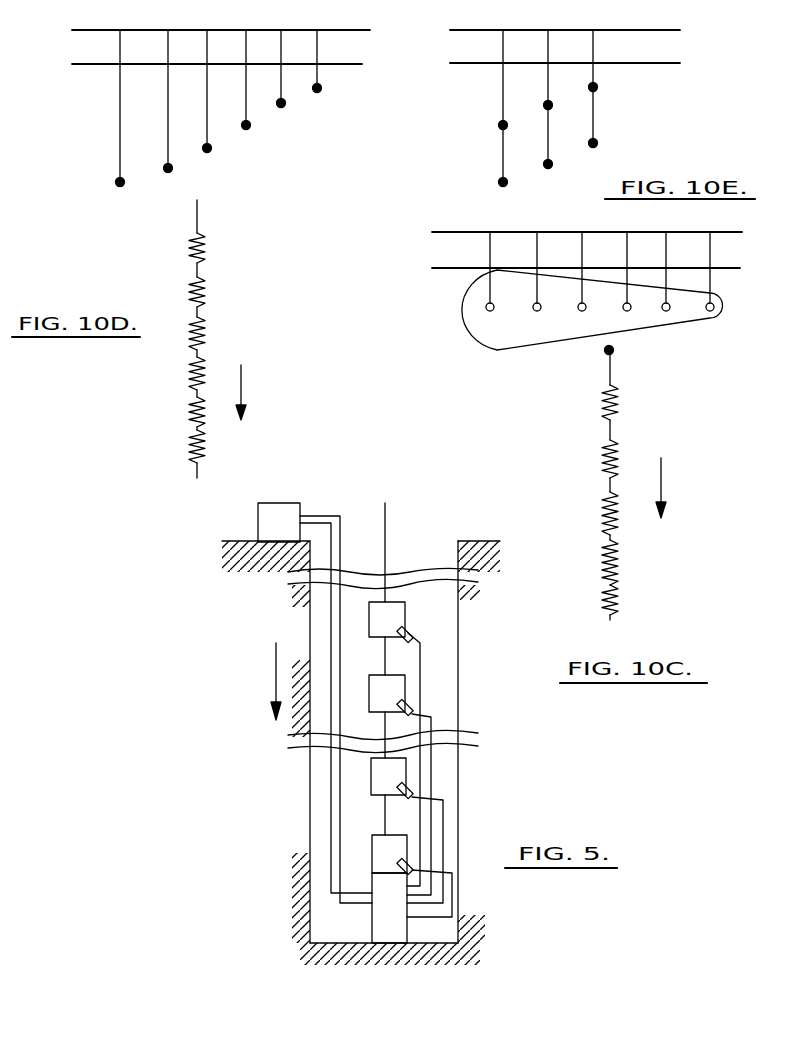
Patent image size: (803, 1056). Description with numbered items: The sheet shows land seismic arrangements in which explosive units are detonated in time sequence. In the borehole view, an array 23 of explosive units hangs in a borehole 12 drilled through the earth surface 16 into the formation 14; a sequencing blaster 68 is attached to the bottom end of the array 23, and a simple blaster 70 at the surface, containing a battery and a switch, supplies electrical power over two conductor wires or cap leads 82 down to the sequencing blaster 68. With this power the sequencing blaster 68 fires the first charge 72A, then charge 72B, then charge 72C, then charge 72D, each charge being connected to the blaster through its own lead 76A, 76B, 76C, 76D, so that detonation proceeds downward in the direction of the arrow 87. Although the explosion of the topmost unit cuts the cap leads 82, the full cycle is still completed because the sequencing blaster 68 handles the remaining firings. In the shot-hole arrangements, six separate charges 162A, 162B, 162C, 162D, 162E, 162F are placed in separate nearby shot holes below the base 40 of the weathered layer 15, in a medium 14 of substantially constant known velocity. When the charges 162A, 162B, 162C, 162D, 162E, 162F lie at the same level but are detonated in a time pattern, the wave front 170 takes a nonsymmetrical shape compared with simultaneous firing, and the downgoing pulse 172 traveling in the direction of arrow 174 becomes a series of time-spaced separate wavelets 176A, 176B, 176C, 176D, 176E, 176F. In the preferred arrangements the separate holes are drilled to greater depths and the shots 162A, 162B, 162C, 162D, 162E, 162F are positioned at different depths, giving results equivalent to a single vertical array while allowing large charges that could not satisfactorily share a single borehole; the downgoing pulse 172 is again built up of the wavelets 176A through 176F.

In FIG. 5, the borehole 12 is at (460, 623).
In FIG. 10D, the medium 14 is at (86, 155).
In FIG. 10E, the medium 14 is at (462, 170).
In FIG. 10C, the medium 14 is at (502, 428).
In FIG. 5, the medium 14 is at (247, 620).
In FIG. 10D, the weathered layer 15 is at (92, 57).
In FIG. 10E, the weathered layer 15 is at (470, 57).
In FIG. 10C, the weathered layer 15 is at (459, 259).
In FIG. 10D, the earth surface / conductor line 16 is at (107, 29).
In FIG. 10E, the earth surface / conductor line 16 is at (638, 29).
In FIG. 10C, the earth surface / conductor line 16 is at (558, 232).
In FIG. 5, the earth surface / conductor line 16 is at (494, 541).
In FIG. 5, the array 23 is at (386, 528).
In FIG. 10D, the base of the weathered layer 40 is at (105, 66).
In FIG. 10E, the base of the weathered layer 40 is at (626, 65).
In FIG. 10C, the base of the weathered layer 40 is at (718, 268).
In FIG. 5, the sequencing blaster 68 is at (388, 940).
In FIG. 5, the blaster 70 is at (286, 502).
In FIG. 5, the first charge 72A is at (407, 615).
In FIG. 5, the charge 72B is at (407, 690).
In FIG. 5, the charge 72C is at (407, 773).
In FIG. 5, the charge 72D is at (407, 853).
In FIG. 5, the sensor conductor 76A is at (422, 660).
In FIG. 5, the sensor conductor 76B is at (433, 773).
In FIG. 5, the sensor conductor 76C is at (444, 812).
In FIG. 5, the sensor conductor 76D is at (453, 903).
In FIG. 5, the cap leads 82 is at (325, 515).
In FIG. 5, the arrow 87 is at (273, 679).
In FIG. 10D, the charge 162A is at (120, 188).
In FIG. 10E, the charge 162A is at (500, 186).
In FIG. 10C, the charge 162A is at (486, 307).
In FIG. 10D, the charge 162B is at (165, 171).
In FIG. 10E, the charge 162B is at (550, 168).
In FIG. 10C, the charge 162B is at (534, 311).
In FIG. 10D, the charge 162C is at (208, 152).
In FIG. 10E, the charge 162C is at (597, 144).
In FIG. 10C, the charge 162C is at (584, 312).
In FIG. 10D, the charge 162D is at (248, 129).
In FIG. 10E, the charge 162D is at (498, 125).
In FIG. 10C, the charge 162D is at (630, 312).
In FIG. 10D, the charge 162E is at (283, 106).
In FIG. 10E, the charge 162E is at (552, 105).
In FIG. 10C, the charge 162E is at (670, 312).
In FIG. 10D, the charge 162F is at (321, 89).
In FIG. 10E, the charge 162F is at (597, 88).
In FIG. 10C, the charge 162F is at (715, 307).
In FIG. 10C, the wave front 170 is at (580, 339).
In FIG. 10D, the downgoing pulse 172 is at (203, 312).
In FIG. 10C, the downgoing pulse 172 is at (612, 436).
In FIG. 10D, the direction arrow 174 is at (243, 382).
In FIG. 10C, the direction arrow 174 is at (665, 478).
In FIG. 10D, the wavelet 176A is at (190, 447).
In FIG. 10C, the wavelet 176A is at (597, 598).
In FIG. 10D, the wavelet 176B is at (185, 408).
In FIG. 10C, the wavelet 176B is at (597, 553).
In FIG. 10D, the wavelet 176C is at (185, 380).
In FIG. 10C, the wavelet 176C is at (597, 506).
In FIG. 10D, the resistor 176D is at (185, 340).
In FIG. 10C, the resistor 176D is at (598, 456).
In FIG. 10D, the resistor 176E is at (190, 303).
In FIG. 10D, the resistor 176F is at (190, 252).